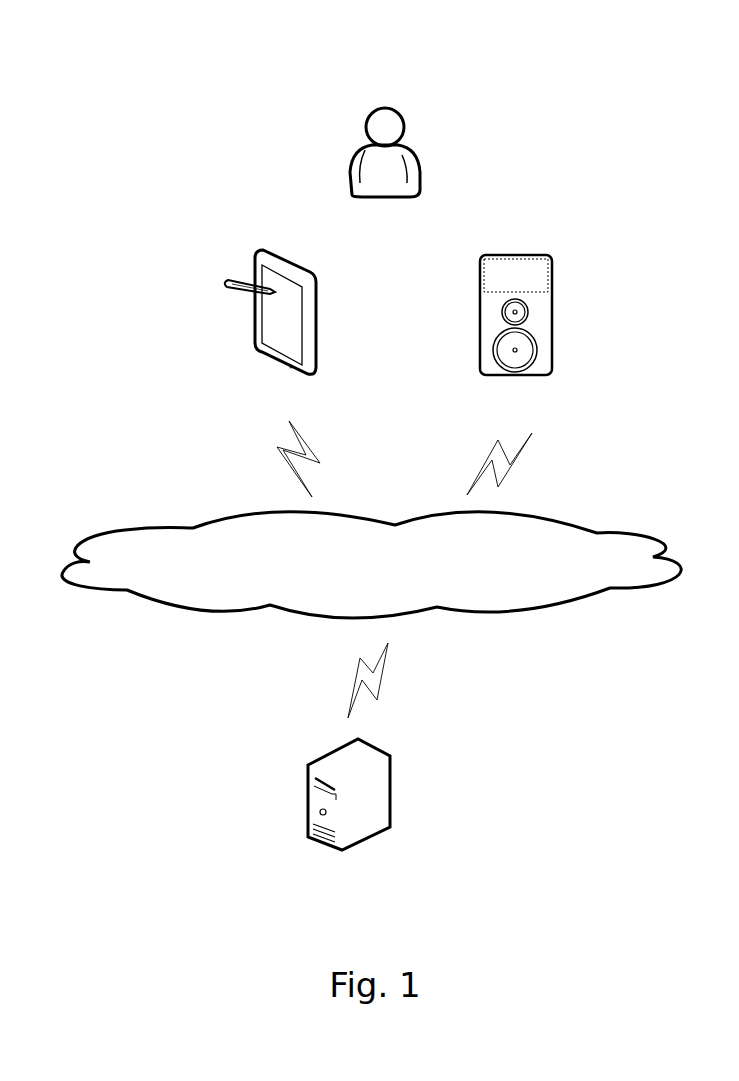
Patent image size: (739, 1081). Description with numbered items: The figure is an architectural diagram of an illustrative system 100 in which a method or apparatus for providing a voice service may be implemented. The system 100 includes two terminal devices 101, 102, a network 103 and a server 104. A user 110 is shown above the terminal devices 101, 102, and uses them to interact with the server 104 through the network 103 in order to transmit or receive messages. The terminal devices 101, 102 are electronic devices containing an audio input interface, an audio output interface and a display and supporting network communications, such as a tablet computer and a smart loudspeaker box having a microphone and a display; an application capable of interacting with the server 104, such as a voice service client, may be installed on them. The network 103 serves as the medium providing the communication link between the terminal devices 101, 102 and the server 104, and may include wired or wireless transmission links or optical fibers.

The system 100 is at (583, 50).
The user 110 is at (385, 174).
The terminal device 101 is at (270, 331).
The terminal device 102 is at (516, 333).
The network 103 is at (371, 565).
The server 104 is at (349, 820).